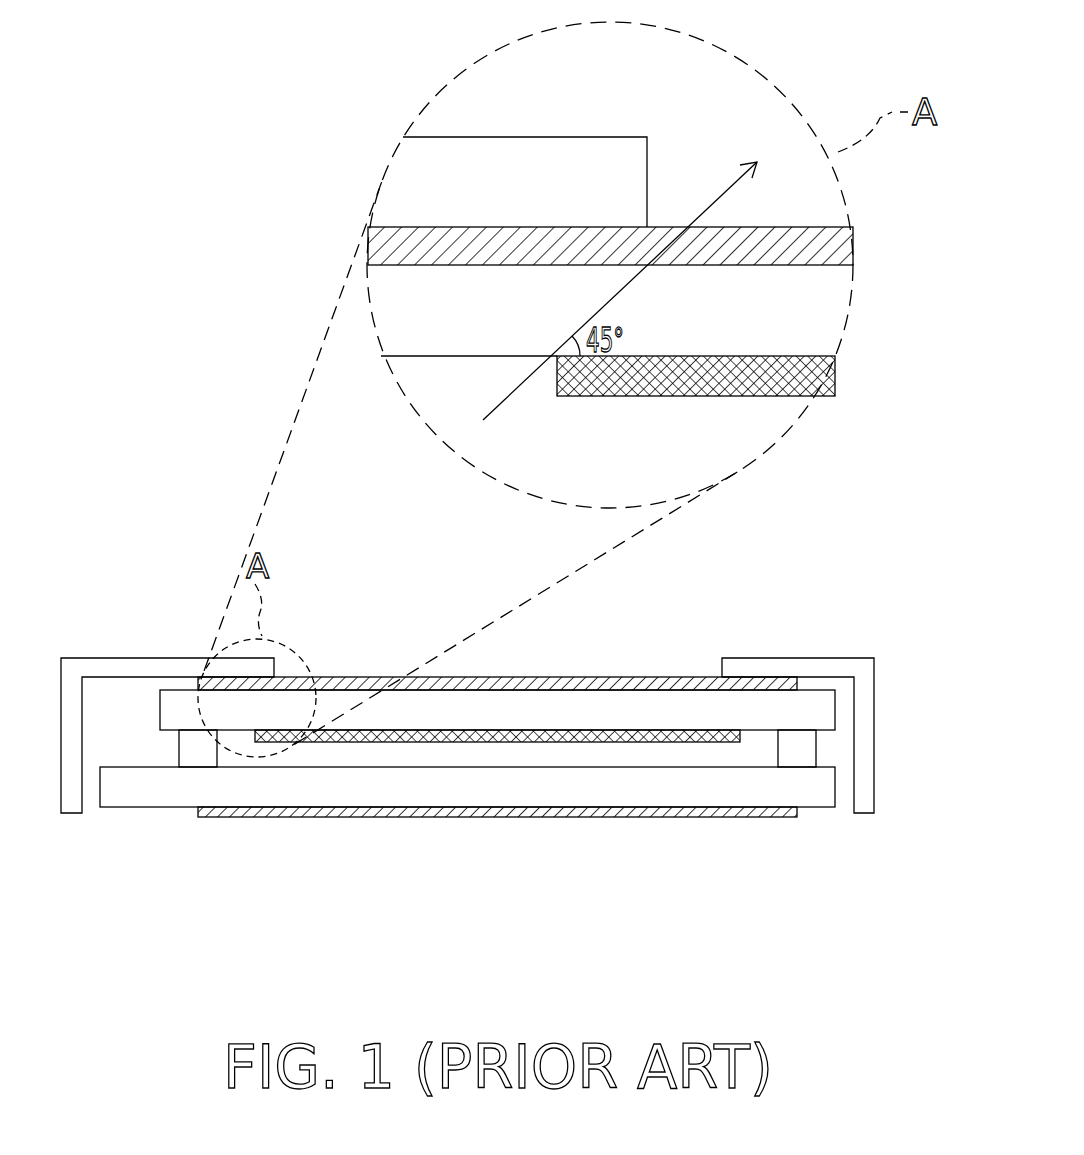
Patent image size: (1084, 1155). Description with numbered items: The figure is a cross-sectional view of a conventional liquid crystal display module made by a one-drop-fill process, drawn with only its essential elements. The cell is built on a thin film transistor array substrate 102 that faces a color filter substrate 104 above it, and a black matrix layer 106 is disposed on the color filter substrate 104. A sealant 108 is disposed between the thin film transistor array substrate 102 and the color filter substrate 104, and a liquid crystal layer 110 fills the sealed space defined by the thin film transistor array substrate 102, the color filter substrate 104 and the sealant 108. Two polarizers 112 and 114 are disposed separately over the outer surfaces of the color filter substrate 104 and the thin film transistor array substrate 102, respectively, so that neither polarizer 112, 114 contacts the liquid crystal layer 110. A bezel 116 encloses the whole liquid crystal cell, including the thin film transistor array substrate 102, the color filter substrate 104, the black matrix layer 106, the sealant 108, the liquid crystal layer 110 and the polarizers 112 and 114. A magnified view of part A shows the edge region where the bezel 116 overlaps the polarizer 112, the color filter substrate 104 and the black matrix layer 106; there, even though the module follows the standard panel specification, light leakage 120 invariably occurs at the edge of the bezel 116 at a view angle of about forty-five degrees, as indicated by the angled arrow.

The thin film transistor array substrate 102 is at (130, 787).
The color filter substrate 104 is at (772, 310).
The black matrix layer 106 is at (790, 380).
The sealant 108 is at (198, 748).
The liquid crystal layer 110 is at (521, 752).
The polarizer 112 is at (775, 246).
The polarizer 114 is at (250, 817).
The bezel 116 is at (632, 145).
The light leakage 120 is at (722, 208).